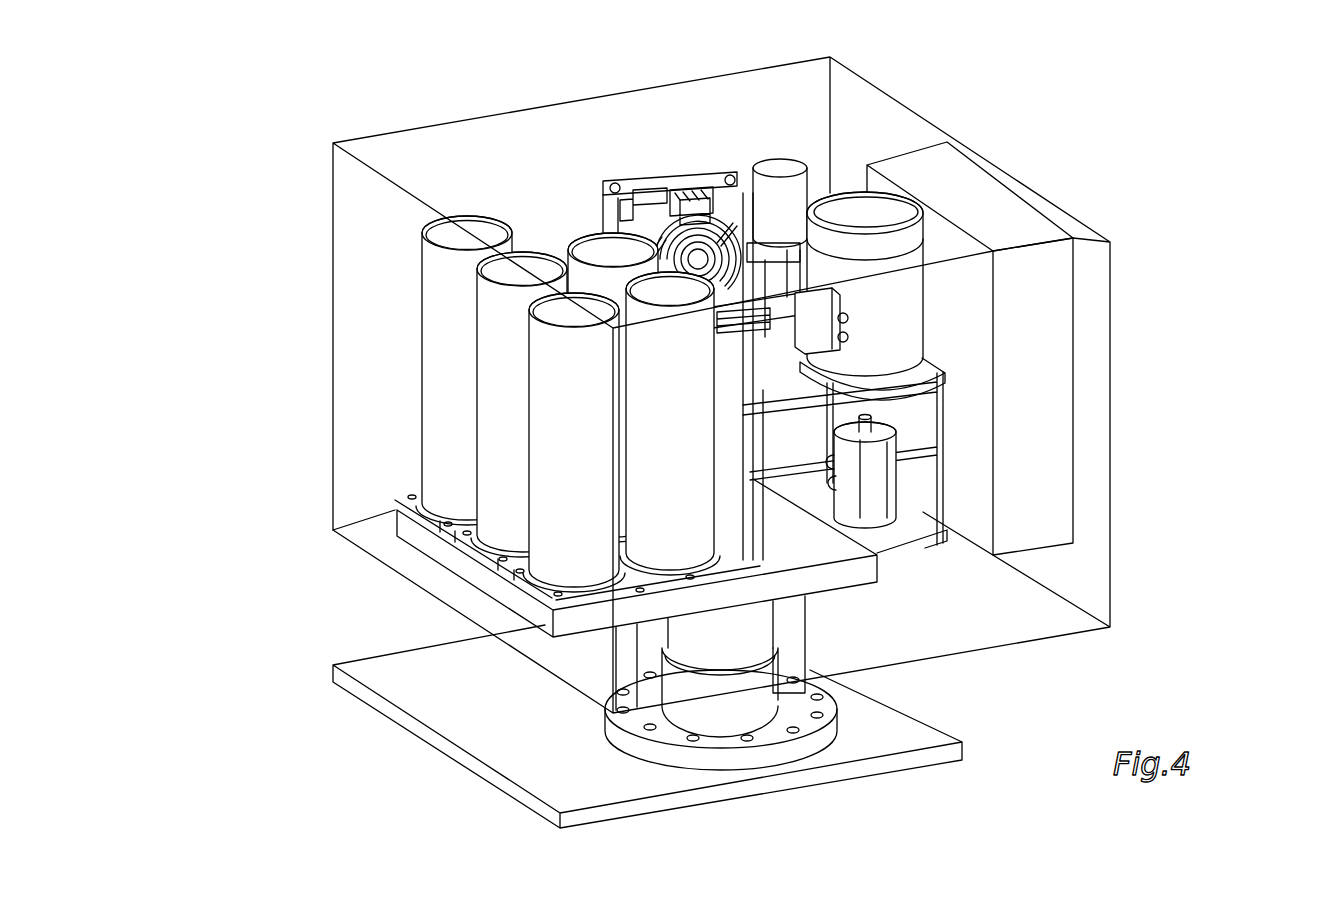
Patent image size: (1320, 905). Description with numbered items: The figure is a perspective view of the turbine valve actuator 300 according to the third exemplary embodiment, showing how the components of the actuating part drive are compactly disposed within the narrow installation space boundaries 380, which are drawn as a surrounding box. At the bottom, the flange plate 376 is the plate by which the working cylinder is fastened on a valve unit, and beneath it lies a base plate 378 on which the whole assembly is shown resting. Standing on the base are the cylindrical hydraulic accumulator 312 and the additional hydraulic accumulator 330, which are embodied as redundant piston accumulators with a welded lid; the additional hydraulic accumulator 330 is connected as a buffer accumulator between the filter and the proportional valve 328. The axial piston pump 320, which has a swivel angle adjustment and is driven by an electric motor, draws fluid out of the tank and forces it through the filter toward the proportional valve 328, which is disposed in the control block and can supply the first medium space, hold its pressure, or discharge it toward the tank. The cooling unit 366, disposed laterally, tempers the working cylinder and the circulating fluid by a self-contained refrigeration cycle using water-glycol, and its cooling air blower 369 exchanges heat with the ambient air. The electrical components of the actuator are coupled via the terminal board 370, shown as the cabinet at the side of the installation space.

The turbine valve actuator 300 is at (1078, 164).
The hydraulic accumulator 312 is at (427, 300).
The axial piston pump 320 is at (890, 505).
The proportional valve 328 is at (866, 218).
The additional hydraulic accumulator 330 is at (451, 361).
The cooling unit 366 is at (664, 170).
The cooling air blower 369 is at (727, 185).
The terminal board 370 is at (1074, 300).
The flange plate 376 is at (666, 752).
The base plate 378 is at (557, 788).
The installation space boundaries 380 is at (333, 425).